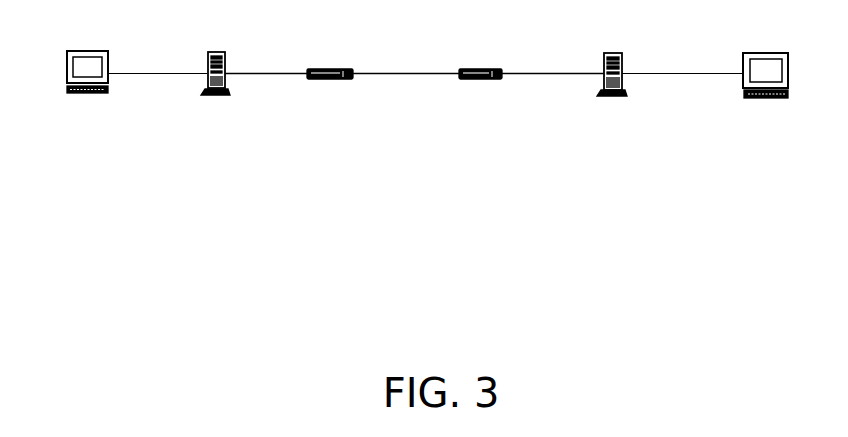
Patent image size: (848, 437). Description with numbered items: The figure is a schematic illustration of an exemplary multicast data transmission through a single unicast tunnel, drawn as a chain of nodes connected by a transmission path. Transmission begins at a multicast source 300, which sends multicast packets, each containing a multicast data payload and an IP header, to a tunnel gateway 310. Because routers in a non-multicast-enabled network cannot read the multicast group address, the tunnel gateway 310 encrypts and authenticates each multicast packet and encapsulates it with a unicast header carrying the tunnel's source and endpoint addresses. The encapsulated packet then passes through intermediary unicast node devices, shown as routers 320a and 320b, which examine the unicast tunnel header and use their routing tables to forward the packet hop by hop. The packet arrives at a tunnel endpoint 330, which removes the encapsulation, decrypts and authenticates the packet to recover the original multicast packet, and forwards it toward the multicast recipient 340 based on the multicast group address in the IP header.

The multicast source 300 is at (93, 52).
The tunnel gateway 310 is at (222, 52).
The router 320a is at (342, 69).
The router 320b is at (492, 69).
The tunnel endpoint 330 is at (620, 53).
The multicast recipient 340 is at (750, 55).